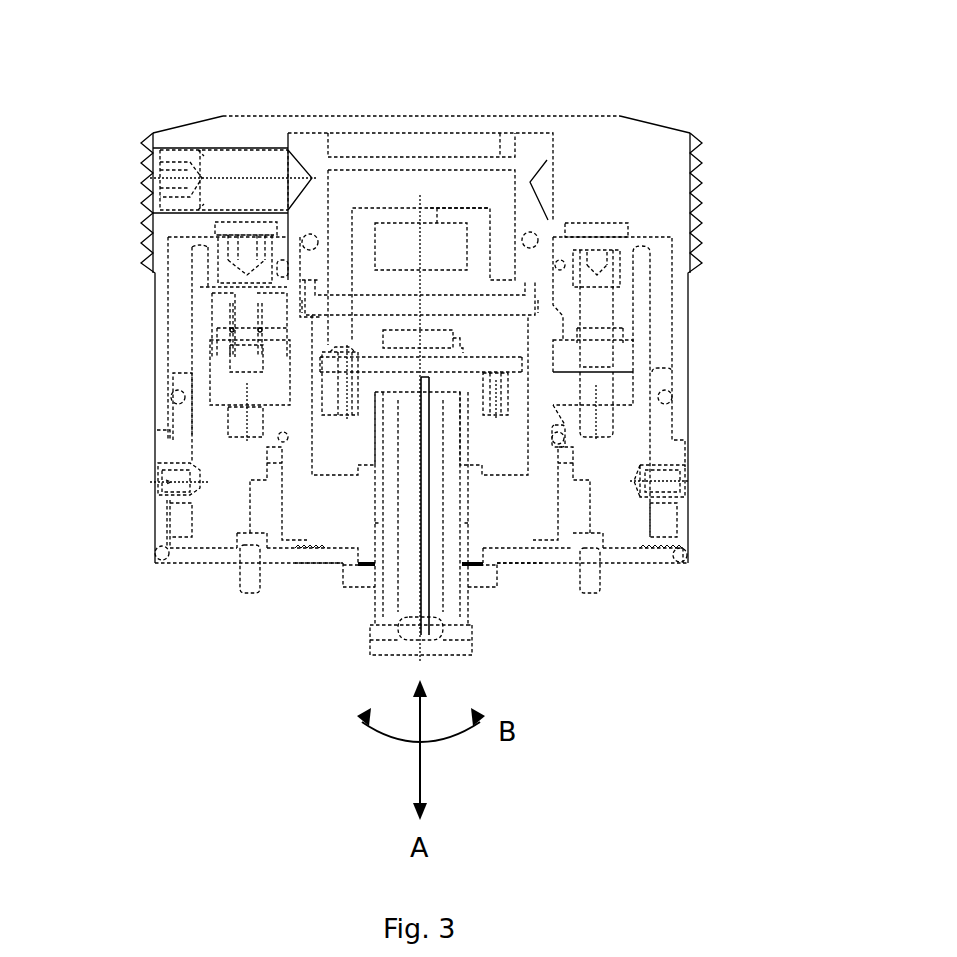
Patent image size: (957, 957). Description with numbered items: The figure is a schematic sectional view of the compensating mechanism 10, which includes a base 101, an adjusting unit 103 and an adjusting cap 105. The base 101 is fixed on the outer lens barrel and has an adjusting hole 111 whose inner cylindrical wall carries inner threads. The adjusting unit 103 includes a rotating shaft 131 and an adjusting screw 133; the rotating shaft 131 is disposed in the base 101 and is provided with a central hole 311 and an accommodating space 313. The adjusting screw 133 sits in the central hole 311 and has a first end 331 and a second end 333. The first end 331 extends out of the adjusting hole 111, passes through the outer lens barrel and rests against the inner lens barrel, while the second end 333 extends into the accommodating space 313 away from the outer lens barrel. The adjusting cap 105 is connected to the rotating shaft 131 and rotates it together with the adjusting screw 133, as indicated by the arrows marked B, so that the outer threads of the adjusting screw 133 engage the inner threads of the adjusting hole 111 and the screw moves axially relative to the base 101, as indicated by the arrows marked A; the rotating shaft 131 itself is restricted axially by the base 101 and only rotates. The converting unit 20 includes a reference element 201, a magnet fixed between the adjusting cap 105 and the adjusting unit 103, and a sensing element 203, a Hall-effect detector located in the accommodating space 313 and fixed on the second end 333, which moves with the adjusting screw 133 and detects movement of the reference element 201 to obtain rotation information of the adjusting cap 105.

The compensating mechanism 10 is at (138, 26).
The adjusting cap 105 is at (618, 188).
The converting unit 20 is at (68, 231).
The reference element 201 is at (400, 250).
The sensing element 203 is at (395, 340).
The second end 333 is at (438, 437).
The accommodating space 313 is at (507, 458).
The central hole 311 is at (463, 548).
The base 101 is at (260, 508).
The adjusting unit 103 is at (126, 623).
The rotating shaft 131 is at (323, 527).
The adjusting screw 133 is at (387, 640).
The adjusting hole 111 is at (463, 570).
The first end 331 is at (458, 640).